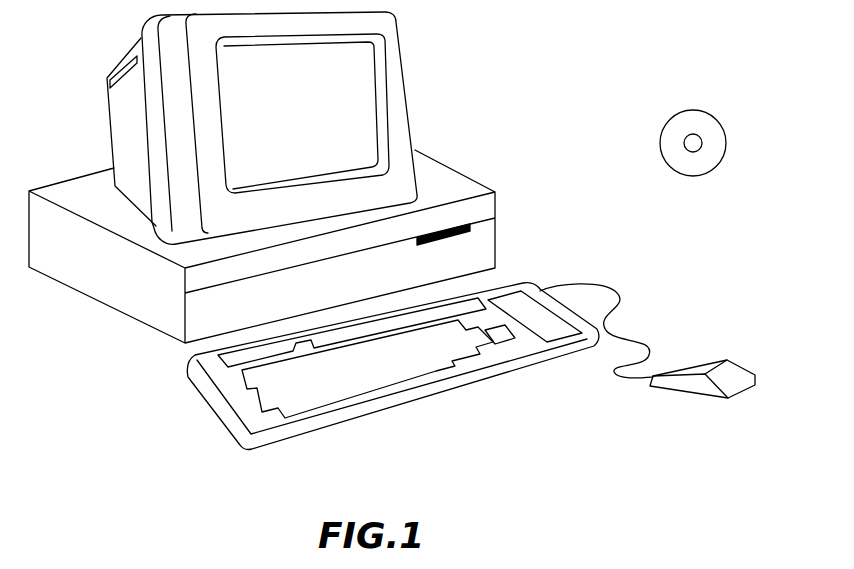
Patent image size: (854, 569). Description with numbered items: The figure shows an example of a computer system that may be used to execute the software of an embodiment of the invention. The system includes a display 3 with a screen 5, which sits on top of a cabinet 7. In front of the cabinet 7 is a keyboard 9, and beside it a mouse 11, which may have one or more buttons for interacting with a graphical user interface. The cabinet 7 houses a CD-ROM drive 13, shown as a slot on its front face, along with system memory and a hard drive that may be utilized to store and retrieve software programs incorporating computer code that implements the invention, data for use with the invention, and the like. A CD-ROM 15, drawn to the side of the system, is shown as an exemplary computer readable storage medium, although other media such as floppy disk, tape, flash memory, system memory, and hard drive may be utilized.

The display 3 is at (410, 125).
The screen 5 is at (372, 77).
The cabinet 7 is at (148, 327).
The keyboard 9 is at (392, 415).
The mouse 11 is at (743, 367).
The CD-ROM drive 13 is at (468, 222).
The CD-ROM 15 is at (710, 112).